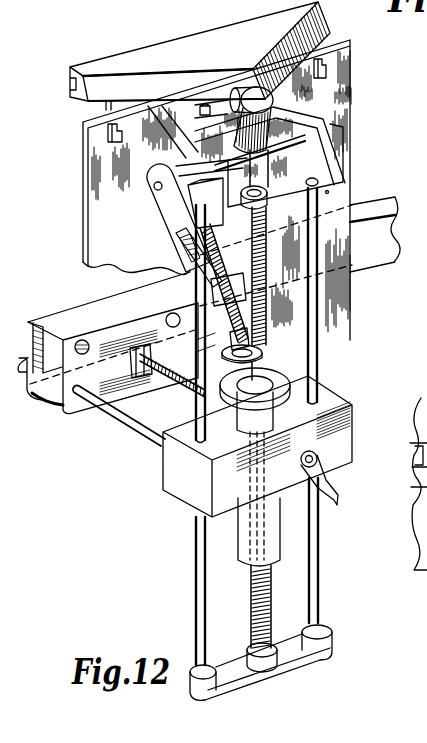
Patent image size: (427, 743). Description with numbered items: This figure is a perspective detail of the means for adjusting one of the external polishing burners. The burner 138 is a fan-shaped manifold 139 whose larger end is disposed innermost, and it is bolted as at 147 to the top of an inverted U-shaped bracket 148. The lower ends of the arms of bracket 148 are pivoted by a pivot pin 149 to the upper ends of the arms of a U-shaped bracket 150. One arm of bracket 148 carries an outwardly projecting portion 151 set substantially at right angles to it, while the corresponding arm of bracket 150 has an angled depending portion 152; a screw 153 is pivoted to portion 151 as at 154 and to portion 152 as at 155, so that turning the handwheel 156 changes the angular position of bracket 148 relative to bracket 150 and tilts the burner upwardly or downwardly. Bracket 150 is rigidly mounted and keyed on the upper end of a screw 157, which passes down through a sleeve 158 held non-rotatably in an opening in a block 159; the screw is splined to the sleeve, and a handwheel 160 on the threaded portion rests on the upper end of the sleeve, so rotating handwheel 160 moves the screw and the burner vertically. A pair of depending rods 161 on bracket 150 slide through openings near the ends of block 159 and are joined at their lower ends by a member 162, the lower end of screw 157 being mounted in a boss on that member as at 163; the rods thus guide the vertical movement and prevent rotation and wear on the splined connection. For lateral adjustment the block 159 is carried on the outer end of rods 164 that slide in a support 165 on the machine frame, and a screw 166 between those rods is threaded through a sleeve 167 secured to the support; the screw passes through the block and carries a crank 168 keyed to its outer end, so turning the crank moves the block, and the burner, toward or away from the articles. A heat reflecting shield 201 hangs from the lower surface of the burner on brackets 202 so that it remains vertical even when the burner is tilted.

The burner 138 is at (75, 67).
The fan-shaped manifold 139 is at (172, 62).
The bolt 147 is at (205, 105).
The inverted U-shaped bracket 148 is at (180, 140).
The pivot pin 149 is at (312, 132).
The U-shaped bracket 150 is at (323, 157).
The outwardly projecting portion 151 is at (156, 206).
The depending portion 152 is at (203, 258).
The screw 153 is at (187, 237).
The pivot 154 is at (168, 226).
The pivot 155 is at (213, 288).
The handwheel 156 is at (262, 350).
The screw 157 is at (320, 247).
The sleeve 158 is at (247, 540).
The block 159 is at (183, 476).
The handwheel 160 is at (275, 382).
The depending rods 161 is at (318, 300).
The member 162 is at (238, 670).
The boss 163 is at (276, 658).
The rods 164 is at (150, 444).
The support 165 is at (72, 328).
The screw 166 is at (187, 395).
The sleeve 167 is at (122, 366).
The crank 168 is at (328, 478).
The heat reflecting shield 201 is at (333, 82).
The brackets 202 is at (327, 63).